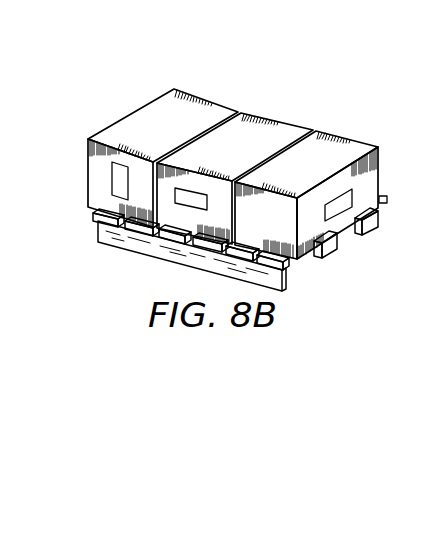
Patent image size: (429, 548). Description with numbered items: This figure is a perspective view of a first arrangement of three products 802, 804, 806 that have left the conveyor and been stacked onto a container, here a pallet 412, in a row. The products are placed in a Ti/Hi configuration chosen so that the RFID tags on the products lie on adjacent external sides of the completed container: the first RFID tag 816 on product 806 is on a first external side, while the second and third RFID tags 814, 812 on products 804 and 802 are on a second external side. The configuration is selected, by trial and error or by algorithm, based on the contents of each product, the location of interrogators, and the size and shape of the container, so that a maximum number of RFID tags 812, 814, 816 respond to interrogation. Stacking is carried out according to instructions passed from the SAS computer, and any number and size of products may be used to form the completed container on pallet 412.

The product 802 is at (215, 106).
The product 804 is at (285, 127).
The product 806 is at (354, 147).
The third RFID tag 812 is at (118, 193).
The second RFID tag 814 is at (188, 203).
The first RFID tag 816 is at (340, 203).
The pallet 412 is at (97, 228).